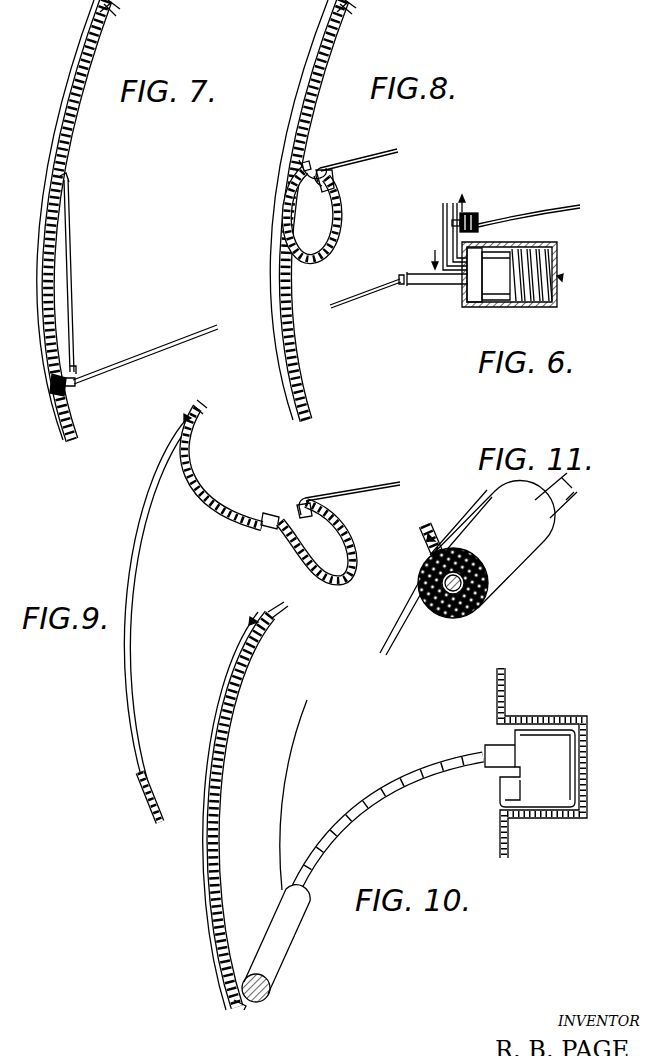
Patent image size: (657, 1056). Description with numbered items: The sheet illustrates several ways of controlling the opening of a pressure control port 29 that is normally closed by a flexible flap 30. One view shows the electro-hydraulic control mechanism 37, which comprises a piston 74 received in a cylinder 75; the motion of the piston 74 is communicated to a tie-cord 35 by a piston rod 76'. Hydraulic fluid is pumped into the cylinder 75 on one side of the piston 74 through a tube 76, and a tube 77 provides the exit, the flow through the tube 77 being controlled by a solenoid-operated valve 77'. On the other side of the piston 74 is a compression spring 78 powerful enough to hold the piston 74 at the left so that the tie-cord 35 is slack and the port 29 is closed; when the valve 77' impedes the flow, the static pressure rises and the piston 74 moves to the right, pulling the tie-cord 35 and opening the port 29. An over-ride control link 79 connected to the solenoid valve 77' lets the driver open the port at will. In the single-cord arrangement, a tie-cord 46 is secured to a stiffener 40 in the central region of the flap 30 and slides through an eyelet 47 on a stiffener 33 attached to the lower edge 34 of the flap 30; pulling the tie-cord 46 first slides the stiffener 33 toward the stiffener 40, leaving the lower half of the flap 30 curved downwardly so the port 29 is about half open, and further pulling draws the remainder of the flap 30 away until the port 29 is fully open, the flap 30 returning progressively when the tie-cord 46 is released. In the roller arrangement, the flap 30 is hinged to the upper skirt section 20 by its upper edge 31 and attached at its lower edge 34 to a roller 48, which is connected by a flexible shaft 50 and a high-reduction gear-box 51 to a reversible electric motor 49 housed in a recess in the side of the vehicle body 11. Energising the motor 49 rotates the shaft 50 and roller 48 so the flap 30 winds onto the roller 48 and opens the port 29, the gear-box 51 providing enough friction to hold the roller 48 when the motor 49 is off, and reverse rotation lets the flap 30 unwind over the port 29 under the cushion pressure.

In FIG. 10, the vehicle body 11 is at (498, 846).
In FIG. 9, the upper skirt section 20 is at (186, 418).
In FIG. 11, the upper skirt section 20 is at (431, 539).
In FIG. 10, the upper skirt section 20 is at (253, 621).
In FIG. 7, the port 29 is at (80, 47).
In FIG. 8, the port 29 is at (284, 358).
In FIG. 9, the port 29 is at (135, 772).
In FIG. 11, the port 29 is at (412, 601).
In FIG. 10, the port 29 is at (222, 968).
In FIG. 7, the flap 30 is at (74, 118).
In FIG. 8, the flap 30 is at (310, 102).
In FIG. 9, the flap 30 is at (205, 495).
In FIG. 11, the flap 30 is at (425, 560).
In FIG. 10, the flap 30 is at (230, 733).
In FIG. 7, the upper edge 31 is at (113, 22).
In FIG. 8, the upper edge 31 is at (346, 8).
In FIG. 9, the upper edge 31 is at (200, 420).
In FIG. 11, the upper edge 31 is at (451, 520).
In FIG. 10, the upper edge 31 is at (276, 624).
In FIG. 7, the stiffener 33 is at (73, 390).
In FIG. 8, the stiffener 33 is at (333, 195).
In FIG. 9, the stiffener 33 is at (316, 541).
In FIG. 8, the lower edge 34 is at (333, 176).
In FIG. 10, the lower edge 34 is at (258, 1004).
In FIG. 8, the tie-cord 35 is at (357, 297).
In FIG. 6, the electro-hydraulic control mechanism 37 is at (560, 277).
In FIG. 7, the stiffener 40 is at (70, 177).
In FIG. 8, the stiffener 40 is at (300, 162).
In FIG. 9, the stiffener 40 is at (266, 527).
In FIG. 7, the tie-cord 46 is at (178, 338).
In FIG. 8, the tie-cord 46 is at (395, 160).
In FIG. 9, the tie-cord 46 is at (372, 493).
In FIG. 7, the eyelet 47 is at (73, 372).
In FIG. 8, the eyelet 47 is at (313, 191).
In FIG. 9, the eyelet 47 is at (297, 508).
In FIG. 11, the roller 48 is at (465, 614).
In FIG. 10, the roller 48 is at (271, 990).
In FIG. 10, the reversible electric motor 49 is at (520, 792).
In FIG. 11, the flexible shaft 50 is at (547, 517).
In FIG. 10, the flexible shaft 50 is at (362, 828).
In FIG. 10, the high-reduction gear-box 51 is at (495, 748).
In FIG. 6, the piston 74 is at (505, 244).
In FIG. 6, the cylinder 75 is at (471, 303).
In FIG. 6, the tube 76 is at (440, 236).
In FIG. 6, the piston rod 76' is at (437, 293).
In FIG. 6, the tube 77 is at (467, 200).
In FIG. 6, the solenoid-operated valve 77' is at (480, 206).
In FIG. 6, the compression spring 78 is at (557, 256).
In FIG. 6, the over-ride control link 79 is at (560, 211).